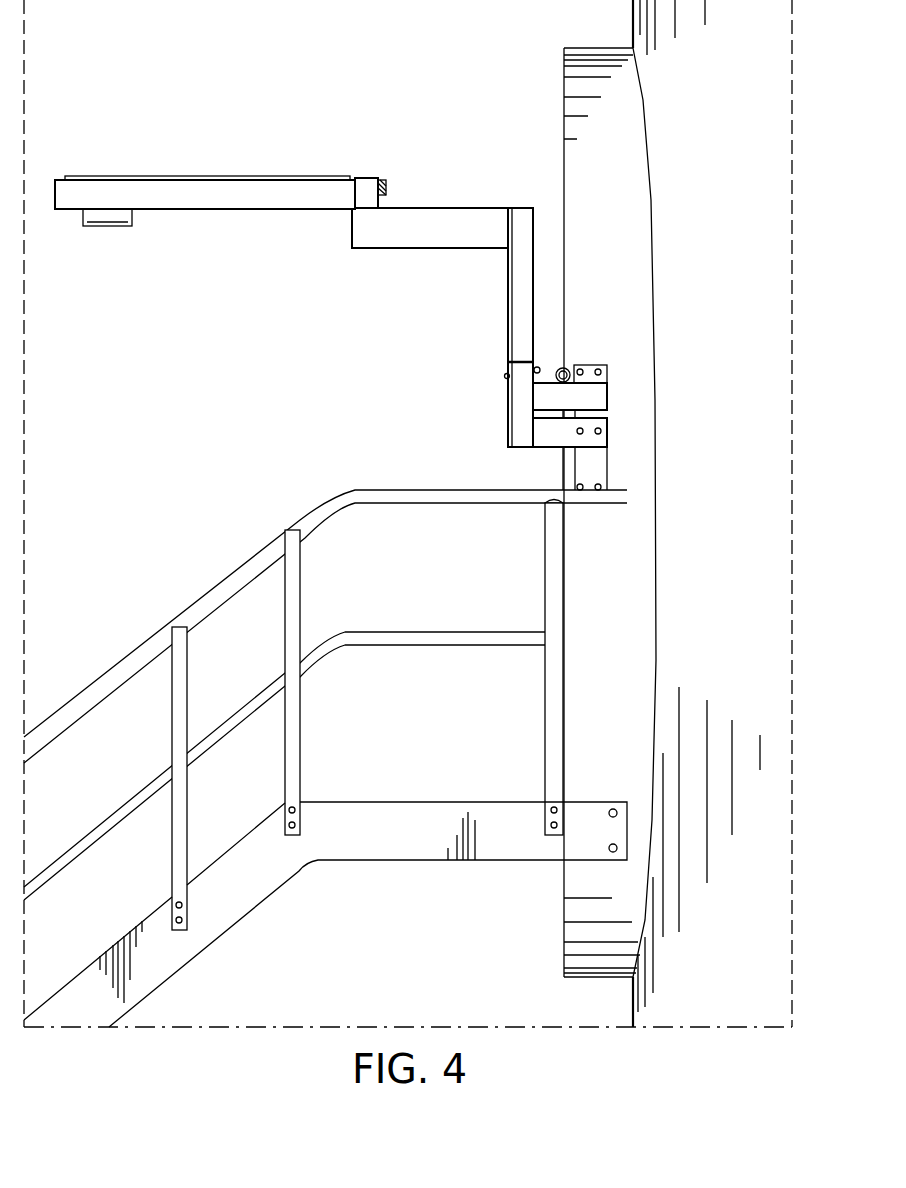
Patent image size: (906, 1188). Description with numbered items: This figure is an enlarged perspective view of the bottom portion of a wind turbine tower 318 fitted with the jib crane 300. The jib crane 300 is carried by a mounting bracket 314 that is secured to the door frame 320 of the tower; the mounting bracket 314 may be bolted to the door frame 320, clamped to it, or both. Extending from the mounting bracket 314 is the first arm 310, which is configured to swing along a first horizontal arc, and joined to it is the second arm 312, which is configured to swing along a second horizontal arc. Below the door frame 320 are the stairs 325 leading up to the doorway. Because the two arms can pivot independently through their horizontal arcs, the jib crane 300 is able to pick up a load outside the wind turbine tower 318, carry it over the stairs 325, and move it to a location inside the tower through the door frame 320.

The jib crane 300 is at (106, 110).
The first arm 310 is at (190, 193).
The second arm 312 is at (453, 220).
The mounting bracket 314 is at (595, 458).
The wind turbine tower 318 is at (752, 616).
The door frame 320 is at (613, 110).
The stairs 325 is at (408, 842).